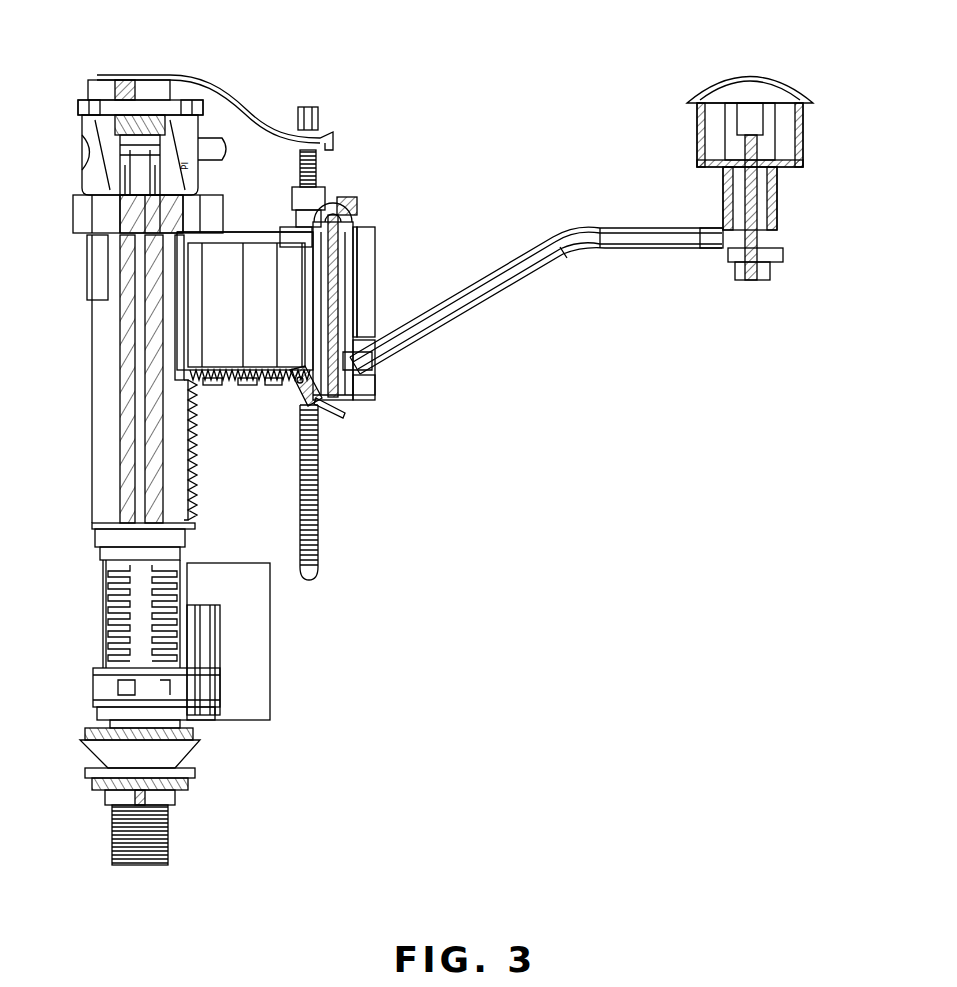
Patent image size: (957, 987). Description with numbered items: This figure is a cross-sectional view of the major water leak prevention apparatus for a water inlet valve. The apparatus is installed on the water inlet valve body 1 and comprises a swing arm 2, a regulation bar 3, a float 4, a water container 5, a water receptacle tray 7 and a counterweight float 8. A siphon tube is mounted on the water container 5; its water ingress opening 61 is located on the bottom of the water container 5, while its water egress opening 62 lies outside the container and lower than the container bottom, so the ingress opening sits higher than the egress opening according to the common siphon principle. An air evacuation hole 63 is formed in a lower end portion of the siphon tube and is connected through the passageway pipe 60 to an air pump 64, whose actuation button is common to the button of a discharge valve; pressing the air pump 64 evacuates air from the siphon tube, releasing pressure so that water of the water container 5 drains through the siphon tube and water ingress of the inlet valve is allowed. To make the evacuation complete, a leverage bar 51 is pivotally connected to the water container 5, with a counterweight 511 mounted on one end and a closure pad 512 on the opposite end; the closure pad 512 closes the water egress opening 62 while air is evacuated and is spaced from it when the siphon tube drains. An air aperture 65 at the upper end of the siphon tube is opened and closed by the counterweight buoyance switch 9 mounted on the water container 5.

The water inlet valve body 1 is at (108, 468).
The swing arm 2 is at (240, 109).
The regulation bar 3 is at (305, 106).
The float 4 is at (273, 242).
The water container 5 is at (233, 232).
The water receptacle tray 7 is at (90, 215).
The counterweight float 8 is at (270, 655).
The counterweight buoyance switch 9 is at (377, 250).
The leverage bar 51 is at (336, 420).
The counterweight 511 is at (298, 402).
The closure pad 512 is at (346, 412).
The passageway pipe 60 is at (528, 263).
The water ingress opening 61 is at (318, 352).
The water egress opening 62 is at (360, 388).
The air evacuation hole 63 is at (364, 368).
The air pump 64 is at (697, 122).
The air aperture 65 is at (358, 208).